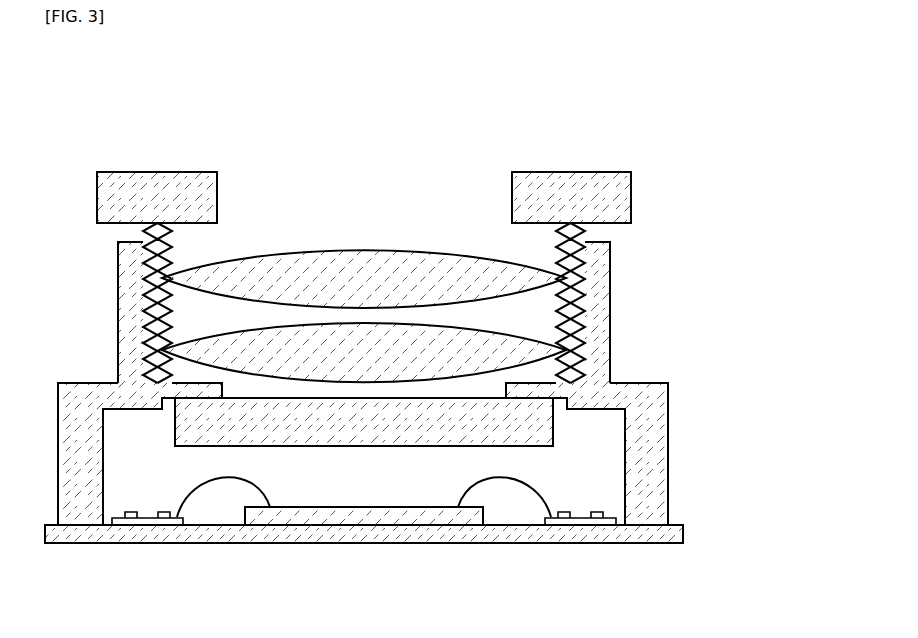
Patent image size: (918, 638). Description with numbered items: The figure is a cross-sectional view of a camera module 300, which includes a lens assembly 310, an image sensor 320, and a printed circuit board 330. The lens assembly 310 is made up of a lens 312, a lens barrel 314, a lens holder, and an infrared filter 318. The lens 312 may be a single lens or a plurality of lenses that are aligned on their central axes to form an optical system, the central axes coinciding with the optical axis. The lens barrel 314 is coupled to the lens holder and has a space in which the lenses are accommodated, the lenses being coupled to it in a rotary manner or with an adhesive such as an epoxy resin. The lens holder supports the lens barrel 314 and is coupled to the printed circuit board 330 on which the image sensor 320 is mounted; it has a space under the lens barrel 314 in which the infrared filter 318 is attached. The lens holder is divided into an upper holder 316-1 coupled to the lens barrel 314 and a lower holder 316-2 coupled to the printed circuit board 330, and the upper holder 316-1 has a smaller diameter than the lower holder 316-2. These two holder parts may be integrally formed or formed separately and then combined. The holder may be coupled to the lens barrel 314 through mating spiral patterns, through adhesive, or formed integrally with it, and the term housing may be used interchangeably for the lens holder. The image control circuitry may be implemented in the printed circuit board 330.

The camera module 300 is at (577, 120).
The lens assembly 310 is at (767, 502).
The lens barrel 314 is at (607, 193).
The upper holder 316-1 is at (608, 257).
The lens 312 is at (525, 268).
The infrared (IR) filter 318 is at (530, 427).
The lower holder 316-2 is at (653, 482).
The image sensor 320 is at (362, 518).
The printed circuit board 330 is at (512, 535).